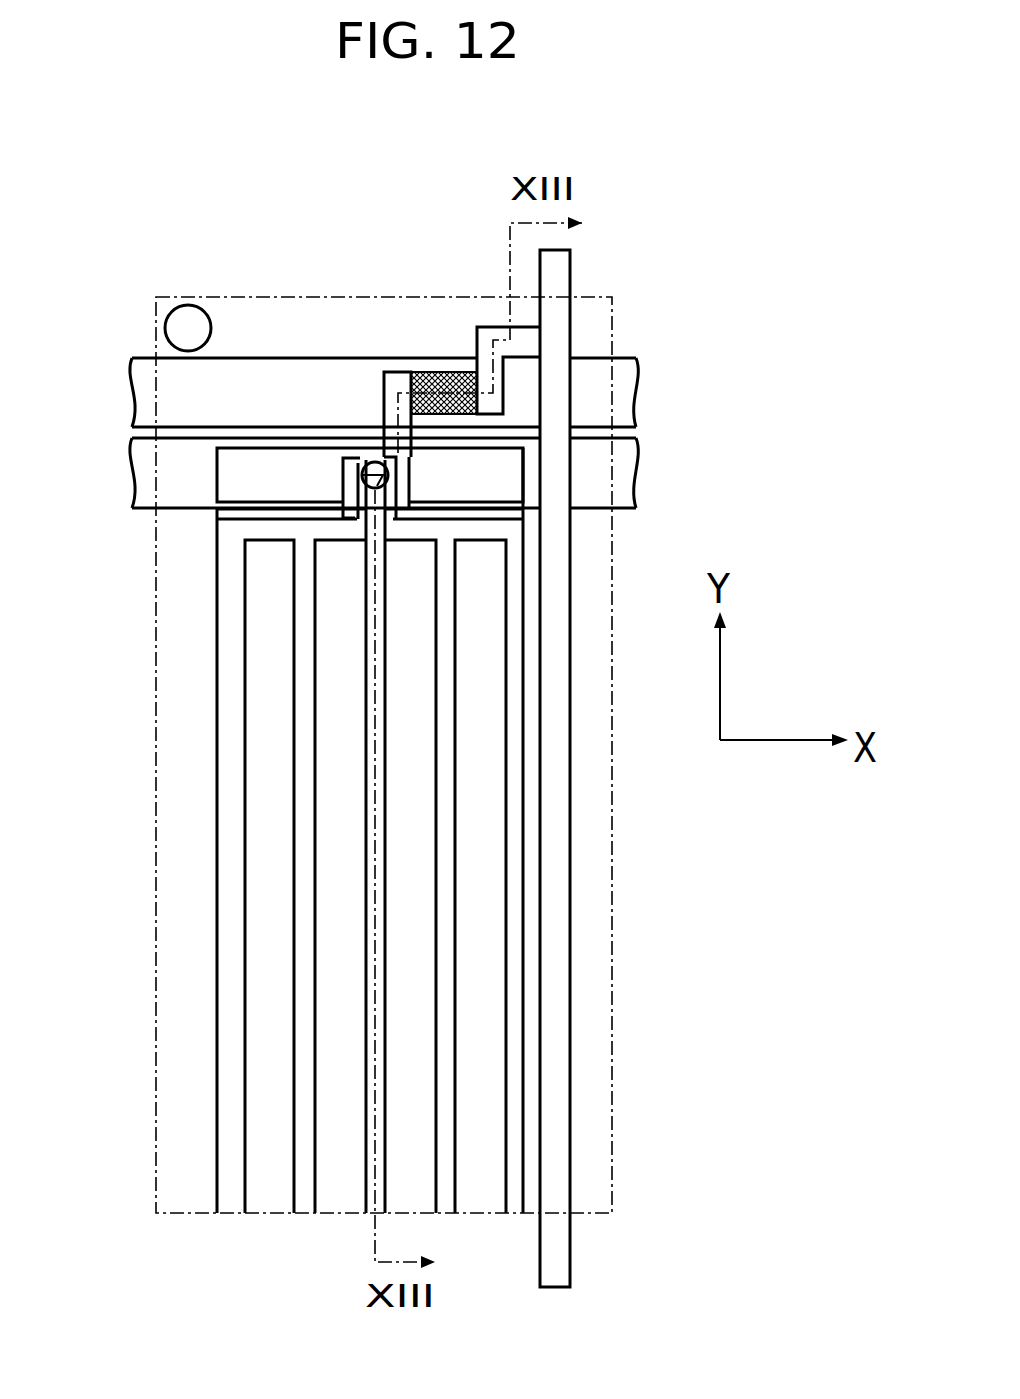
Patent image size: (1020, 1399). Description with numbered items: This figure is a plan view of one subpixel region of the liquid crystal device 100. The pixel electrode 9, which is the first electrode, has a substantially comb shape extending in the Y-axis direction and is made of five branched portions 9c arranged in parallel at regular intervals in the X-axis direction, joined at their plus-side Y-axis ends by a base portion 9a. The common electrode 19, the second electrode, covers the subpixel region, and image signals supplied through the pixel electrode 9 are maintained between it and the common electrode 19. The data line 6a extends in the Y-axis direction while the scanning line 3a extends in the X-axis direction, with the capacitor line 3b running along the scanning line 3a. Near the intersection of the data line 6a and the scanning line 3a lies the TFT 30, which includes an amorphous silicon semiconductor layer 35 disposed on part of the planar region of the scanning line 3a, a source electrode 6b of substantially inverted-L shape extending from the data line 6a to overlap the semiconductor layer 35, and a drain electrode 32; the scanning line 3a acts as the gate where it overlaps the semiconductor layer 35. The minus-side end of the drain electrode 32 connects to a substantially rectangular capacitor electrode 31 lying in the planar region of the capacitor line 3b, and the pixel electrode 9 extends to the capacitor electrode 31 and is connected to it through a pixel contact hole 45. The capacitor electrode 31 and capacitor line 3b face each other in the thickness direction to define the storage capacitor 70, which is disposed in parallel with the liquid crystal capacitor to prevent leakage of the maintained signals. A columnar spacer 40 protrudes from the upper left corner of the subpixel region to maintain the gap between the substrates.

The scanning line 3a is at (143, 362).
The capacitor line 3b is at (150, 503).
The data line 6a is at (570, 1258).
The source electrode 6b is at (483, 327).
The pixel electrode 9 is at (203, 672).
The base portion 9a is at (290, 522).
The branched portions 9c is at (243, 1215).
The common electrode 19 is at (613, 857).
The TFT 30 is at (410, 326).
The capacitor electrode 31 is at (217, 472).
The drain electrode 32 is at (390, 360).
The semiconductor layer 35 is at (450, 385).
The columnar spacer 40 is at (193, 320).
The pixel contact hole 45 is at (343, 478).
The storage capacitor 70 is at (203, 490).
The liquid crystal device 100 is at (700, 280).